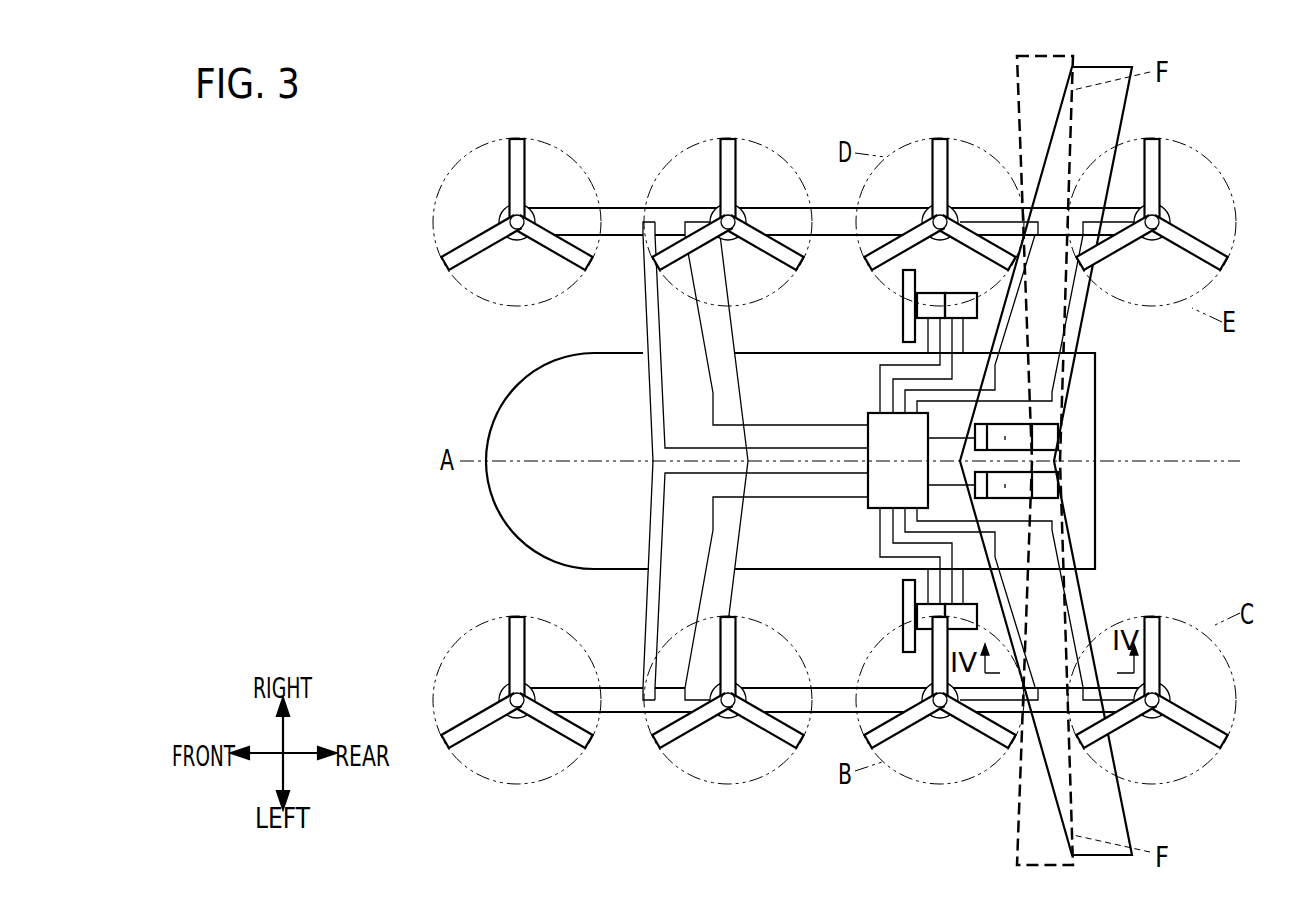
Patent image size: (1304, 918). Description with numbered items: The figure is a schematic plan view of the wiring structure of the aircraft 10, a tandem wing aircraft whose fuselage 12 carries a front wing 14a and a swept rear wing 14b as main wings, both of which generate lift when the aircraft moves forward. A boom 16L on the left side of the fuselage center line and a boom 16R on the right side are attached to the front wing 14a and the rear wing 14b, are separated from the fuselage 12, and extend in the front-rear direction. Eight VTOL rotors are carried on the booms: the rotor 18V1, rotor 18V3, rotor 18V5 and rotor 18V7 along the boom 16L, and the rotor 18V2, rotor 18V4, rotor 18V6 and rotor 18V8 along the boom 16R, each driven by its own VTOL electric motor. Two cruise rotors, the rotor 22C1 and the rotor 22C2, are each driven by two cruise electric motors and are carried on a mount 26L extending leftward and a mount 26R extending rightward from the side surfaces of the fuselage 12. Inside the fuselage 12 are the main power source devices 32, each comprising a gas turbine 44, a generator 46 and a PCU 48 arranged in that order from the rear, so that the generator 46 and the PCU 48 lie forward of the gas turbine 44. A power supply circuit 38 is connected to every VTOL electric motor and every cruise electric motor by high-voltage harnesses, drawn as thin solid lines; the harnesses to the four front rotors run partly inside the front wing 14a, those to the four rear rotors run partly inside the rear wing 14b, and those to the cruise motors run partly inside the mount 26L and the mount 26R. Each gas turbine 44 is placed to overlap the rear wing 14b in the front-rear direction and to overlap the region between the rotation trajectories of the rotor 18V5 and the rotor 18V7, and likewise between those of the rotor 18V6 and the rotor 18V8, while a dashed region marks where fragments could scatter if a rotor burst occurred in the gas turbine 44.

The aircraft 10 is at (369, 194).
The fuselage 12 is at (512, 540).
The front wing 14a is at (650, 486).
The rear wing 14b is at (1100, 268).
The boom 16R is at (628, 215).
The boom 16L is at (628, 713).
The rotor 18V1 is at (468, 745).
The rotor 18V2 is at (513, 140).
The rotor 18V3 is at (685, 750).
The rotor 18V4 is at (724, 140).
The rotor 18V5 is at (890, 750).
The rotor 18V6 is at (938, 140).
The rotor 18V7 is at (1162, 650).
The rotor 18V8 is at (1158, 140).
The rotor 22C1 is at (905, 625).
The rotor 22C2 is at (905, 318).
The mount 26L is at (930, 588).
The mount 26R is at (930, 330).
The main power source device 32 is at (1060, 428).
The power supply circuit 38 is at (868, 438).
The gas turbine 44 is at (1052, 440).
The generator 46 is at (1006, 434).
The PCU 48 is at (978, 434).